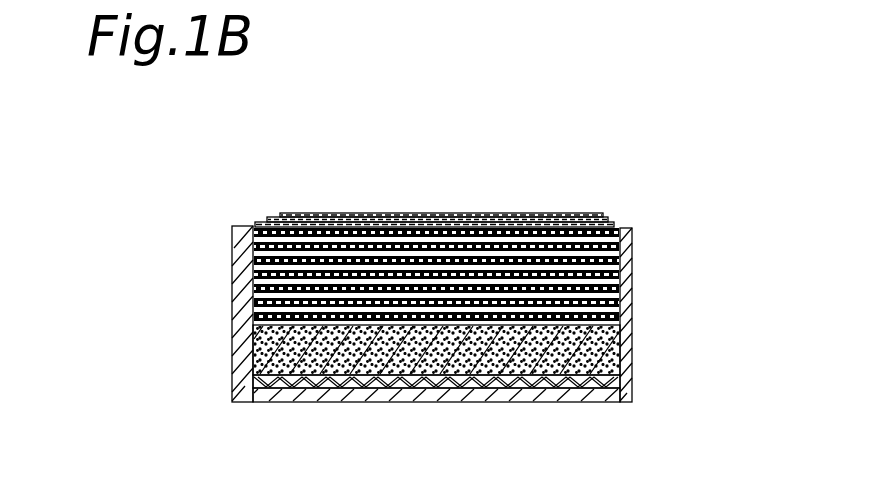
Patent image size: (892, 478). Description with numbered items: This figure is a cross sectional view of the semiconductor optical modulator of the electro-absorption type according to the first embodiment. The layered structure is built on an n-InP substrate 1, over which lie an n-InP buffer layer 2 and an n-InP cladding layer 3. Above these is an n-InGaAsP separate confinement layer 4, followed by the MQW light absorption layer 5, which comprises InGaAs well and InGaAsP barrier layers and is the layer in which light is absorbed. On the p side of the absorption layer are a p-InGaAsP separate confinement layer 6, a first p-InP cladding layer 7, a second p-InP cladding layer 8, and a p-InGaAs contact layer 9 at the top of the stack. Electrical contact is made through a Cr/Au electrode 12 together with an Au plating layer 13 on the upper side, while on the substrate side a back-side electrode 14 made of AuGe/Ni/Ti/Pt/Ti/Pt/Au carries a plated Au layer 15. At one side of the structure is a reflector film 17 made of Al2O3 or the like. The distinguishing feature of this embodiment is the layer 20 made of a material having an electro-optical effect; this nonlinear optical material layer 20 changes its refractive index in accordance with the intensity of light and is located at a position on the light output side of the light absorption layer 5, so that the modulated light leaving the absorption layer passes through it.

The n-InP substrate 1 is at (633, 347).
The n-InP buffer layer 2 is at (475, 237).
The n-InP cladding layer 3 is at (602, 215).
The n-InGaAsP separate confinement layer 4 is at (557, 220).
The MQW light absorption layer 5 is at (518, 222).
The p-InGaAsP separate confinement layer 6 is at (497, 222).
The first p-InP cladding layer 7 is at (453, 230).
The second p-InP cladding layer 8 is at (418, 228).
The p-InGaAs contact layer 9 is at (366, 219).
The Cr/Au electrode 12 is at (322, 217).
The Au plating layer 13 is at (281, 214).
The back-side electrode 14 is at (458, 386).
The plated Au layer 15 is at (413, 403).
The reflector film 17 is at (633, 252).
The nonlinear optical material layer 20 is at (231, 252).